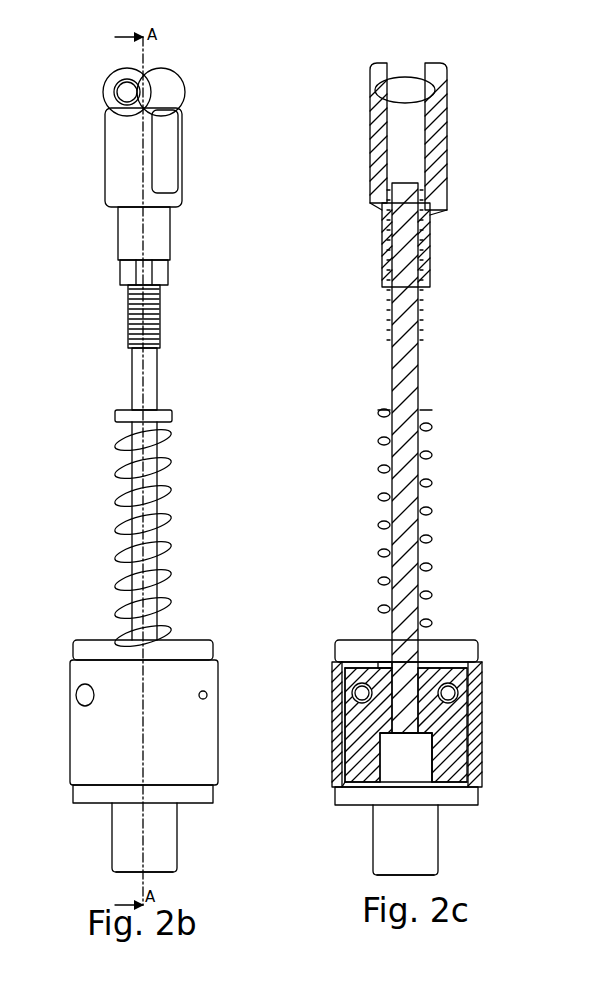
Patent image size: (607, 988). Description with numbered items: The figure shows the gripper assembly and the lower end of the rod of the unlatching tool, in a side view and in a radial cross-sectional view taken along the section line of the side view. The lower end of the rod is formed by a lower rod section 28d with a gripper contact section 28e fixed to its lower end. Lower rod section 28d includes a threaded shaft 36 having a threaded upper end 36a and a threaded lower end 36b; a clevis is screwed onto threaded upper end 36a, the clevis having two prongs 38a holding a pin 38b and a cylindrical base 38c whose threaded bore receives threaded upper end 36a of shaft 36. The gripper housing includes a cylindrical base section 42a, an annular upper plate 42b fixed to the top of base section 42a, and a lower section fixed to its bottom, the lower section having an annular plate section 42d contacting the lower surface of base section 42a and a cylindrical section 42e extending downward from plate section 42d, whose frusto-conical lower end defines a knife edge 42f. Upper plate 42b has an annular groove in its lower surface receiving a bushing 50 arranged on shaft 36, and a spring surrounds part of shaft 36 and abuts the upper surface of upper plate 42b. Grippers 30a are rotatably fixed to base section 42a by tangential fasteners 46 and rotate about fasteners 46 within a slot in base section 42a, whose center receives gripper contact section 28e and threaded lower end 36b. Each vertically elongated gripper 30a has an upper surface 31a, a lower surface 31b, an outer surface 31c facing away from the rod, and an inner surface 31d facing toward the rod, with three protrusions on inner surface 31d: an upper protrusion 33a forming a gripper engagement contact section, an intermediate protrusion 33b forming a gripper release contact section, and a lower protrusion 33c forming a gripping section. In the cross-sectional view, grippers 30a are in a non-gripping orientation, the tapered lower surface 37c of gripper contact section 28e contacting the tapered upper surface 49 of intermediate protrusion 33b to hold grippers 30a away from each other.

In FIG. 2B, the pin 38b is at (127, 92).
In FIG. 2C, the pin 38b is at (410, 88).
In FIG. 2B, the annular upper plate 42b is at (187, 650).
In FIG. 2C, the annular upper plate 42b is at (350, 645).
In FIG. 2B, the cylindrical base section 42a is at (198, 733).
In FIG. 2B, the annular plate section 42d is at (190, 790).
In FIG. 2C, the annular plate section 42d is at (462, 800).
In FIG. 2B, the cylindrical section 42e is at (92, 830).
In FIG. 2C, the cylindrical section 42e is at (375, 835).
In FIG. 2B, the knife edge 42f is at (168, 874).
In FIG. 2C, the knife edge 42f is at (438, 875).
In FIG. 2C, the lower rod section 28d is at (485, 130).
In FIG. 2C, the prongs 38a is at (380, 158).
In FIG. 2C, the cylindrical base 38c is at (428, 232).
In FIG. 2C, the threaded upper end 36a is at (422, 295).
In FIG. 2C, the threaded shaft 36 is at (405, 375).
In FIG. 2C, the upper surface 31a is at (383, 648).
In FIG. 2C, the bushing 50 is at (382, 655).
In FIG. 2C, the upper protrusion 33a is at (440, 648).
In FIG. 2C, the threaded lower end 36b is at (418, 713).
In FIG. 2C, the fasteners 46 is at (350, 686).
In FIG. 2C, the outer surface 31c is at (352, 700).
In FIG. 2C, the tapered upper surface 49 is at (345, 733).
In FIG. 2C, the grippers 30a is at (350, 748).
In FIG. 2C, the gripper contact section 28e is at (437, 720).
In FIG. 2C, the intermediate protrusion 33b is at (437, 735).
In FIG. 2C, the inner surface 31d is at (352, 768).
In FIG. 2C, the tapered lower surface 37c is at (380, 740).
In FIG. 2C, the lower protrusion 33c is at (437, 783).
In FIG. 2C, the lower surface 31b is at (342, 803).